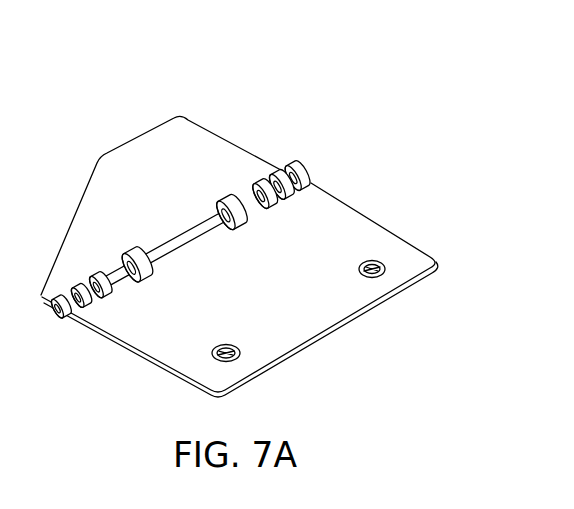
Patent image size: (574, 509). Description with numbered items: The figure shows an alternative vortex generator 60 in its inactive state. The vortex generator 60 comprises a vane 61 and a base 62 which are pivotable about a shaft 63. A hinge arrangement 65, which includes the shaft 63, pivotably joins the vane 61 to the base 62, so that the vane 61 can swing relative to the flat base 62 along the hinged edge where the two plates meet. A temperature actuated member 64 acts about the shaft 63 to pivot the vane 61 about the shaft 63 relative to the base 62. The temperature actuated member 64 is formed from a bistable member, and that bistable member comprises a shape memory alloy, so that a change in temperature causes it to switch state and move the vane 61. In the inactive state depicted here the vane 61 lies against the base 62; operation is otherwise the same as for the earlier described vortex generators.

The vortex generator 60 is at (272, 211).
The vane 61 is at (215, 148).
The base 62 is at (348, 227).
The shaft 63 is at (192, 233).
The temperature actuated member 64 is at (247, 217).
The hinge arrangement 65 is at (308, 168).